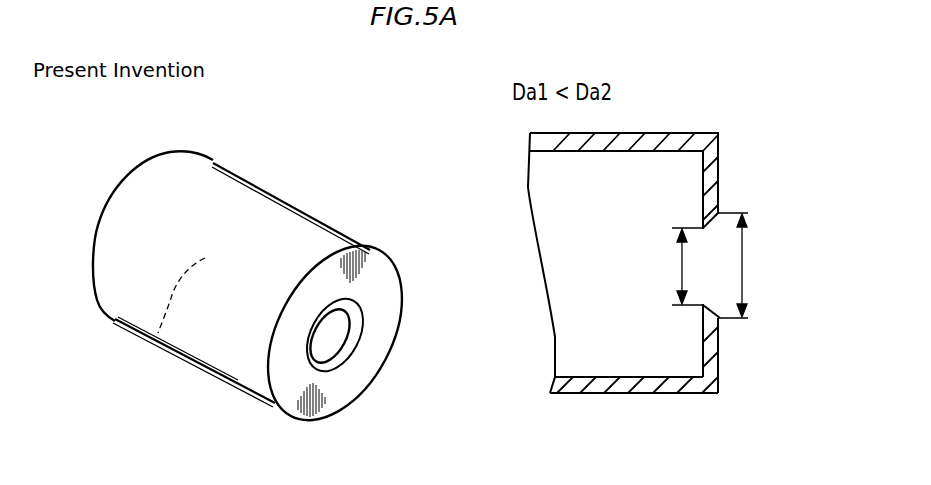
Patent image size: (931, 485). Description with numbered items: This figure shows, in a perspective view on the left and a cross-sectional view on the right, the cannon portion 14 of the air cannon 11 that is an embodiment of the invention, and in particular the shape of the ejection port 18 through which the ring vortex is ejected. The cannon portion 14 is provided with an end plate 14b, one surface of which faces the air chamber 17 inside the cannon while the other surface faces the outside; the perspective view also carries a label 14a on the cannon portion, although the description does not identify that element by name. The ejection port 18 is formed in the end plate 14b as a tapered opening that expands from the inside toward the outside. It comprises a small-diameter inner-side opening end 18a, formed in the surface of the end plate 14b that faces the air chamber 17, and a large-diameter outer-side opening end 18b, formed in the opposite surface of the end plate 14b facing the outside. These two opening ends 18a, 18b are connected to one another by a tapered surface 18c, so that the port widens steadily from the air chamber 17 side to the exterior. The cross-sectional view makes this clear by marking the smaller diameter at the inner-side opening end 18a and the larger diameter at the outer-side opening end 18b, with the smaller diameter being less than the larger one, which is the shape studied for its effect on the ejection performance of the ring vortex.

The air cannon 11 is at (313, 146).
The cannon portion 14 is at (315, 214).
The outer peripheral surface 14a is at (252, 200).
The end plate 14b is at (394, 319).
The air chamber 17 is at (160, 334).
The ejection port 18 is at (316, 338).
The inner-side opening end 18a is at (340, 313).
The outer-side opening end 18b is at (335, 358).
The tapered surface 18c is at (354, 403).